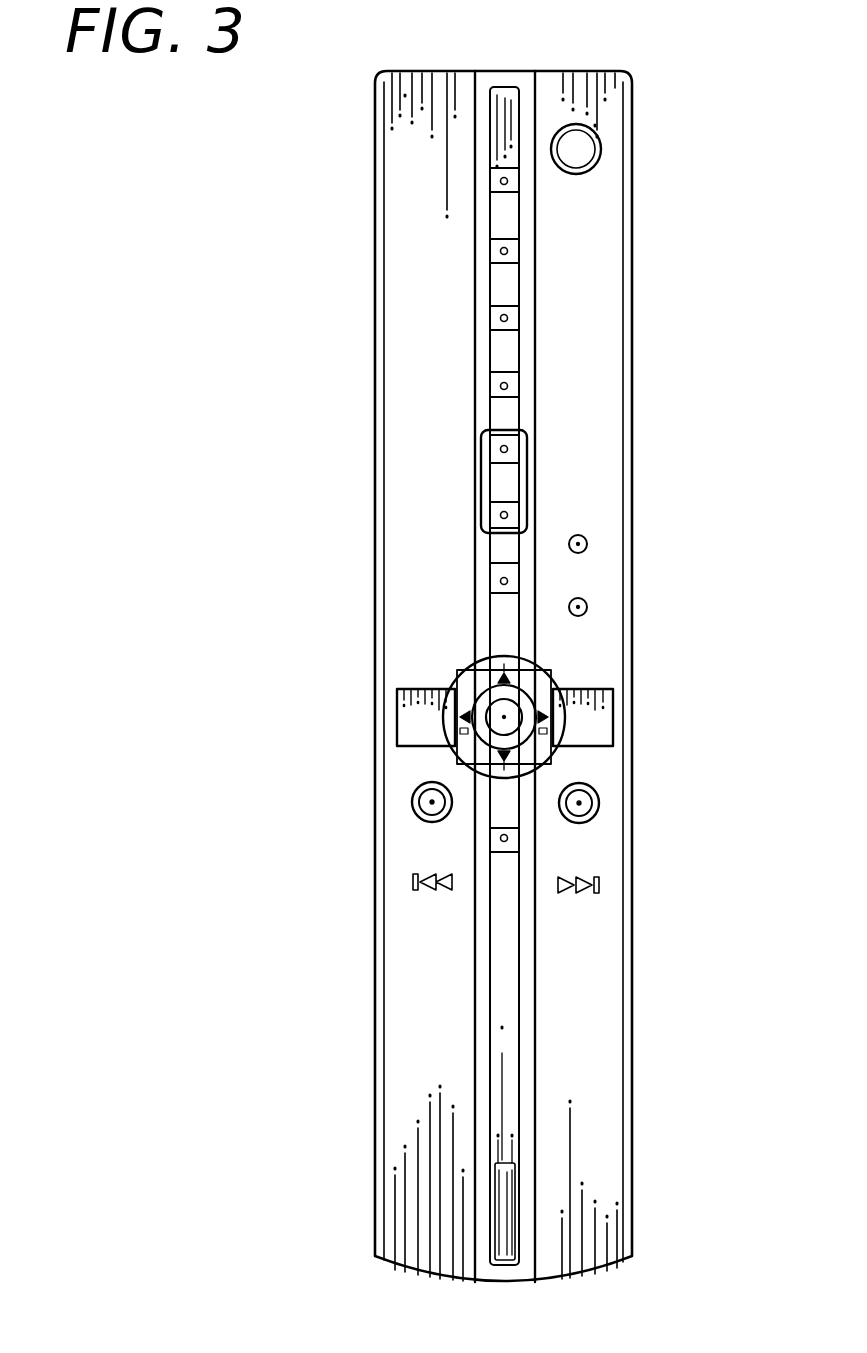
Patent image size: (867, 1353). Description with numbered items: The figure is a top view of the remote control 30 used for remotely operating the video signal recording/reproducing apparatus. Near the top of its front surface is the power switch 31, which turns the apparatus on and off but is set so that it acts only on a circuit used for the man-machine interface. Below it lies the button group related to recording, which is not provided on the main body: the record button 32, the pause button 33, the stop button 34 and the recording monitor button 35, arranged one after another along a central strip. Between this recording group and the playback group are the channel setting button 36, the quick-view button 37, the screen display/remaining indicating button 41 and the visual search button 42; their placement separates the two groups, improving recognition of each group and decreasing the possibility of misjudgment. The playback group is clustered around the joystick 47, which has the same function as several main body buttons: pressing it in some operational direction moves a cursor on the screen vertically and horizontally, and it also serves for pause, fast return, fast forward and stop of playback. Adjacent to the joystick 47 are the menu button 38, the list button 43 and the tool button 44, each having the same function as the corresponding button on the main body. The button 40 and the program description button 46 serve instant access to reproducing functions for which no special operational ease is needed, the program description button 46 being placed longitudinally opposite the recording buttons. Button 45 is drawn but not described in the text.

The remote control 30 is at (436, 70).
The power switch 31 is at (584, 150).
The record button 32 is at (508, 181).
The pause button 33 is at (508, 251).
The stop button 34 is at (508, 318).
The recording monitor button 35 is at (508, 386).
The channel setting button 36 is at (527, 472).
The quick-view button 37 is at (500, 581).
The menu button 38 is at (420, 728).
The button 40 is at (430, 802).
The screen display/remaining indicating button 41 is at (588, 544).
The visual search button 42 is at (588, 607).
The list button 43 is at (590, 733).
The tool button 44 is at (582, 803).
The skip forward button 45 is at (602, 886).
The program description button 46 is at (504, 842).
The joystick 47 is at (506, 714).